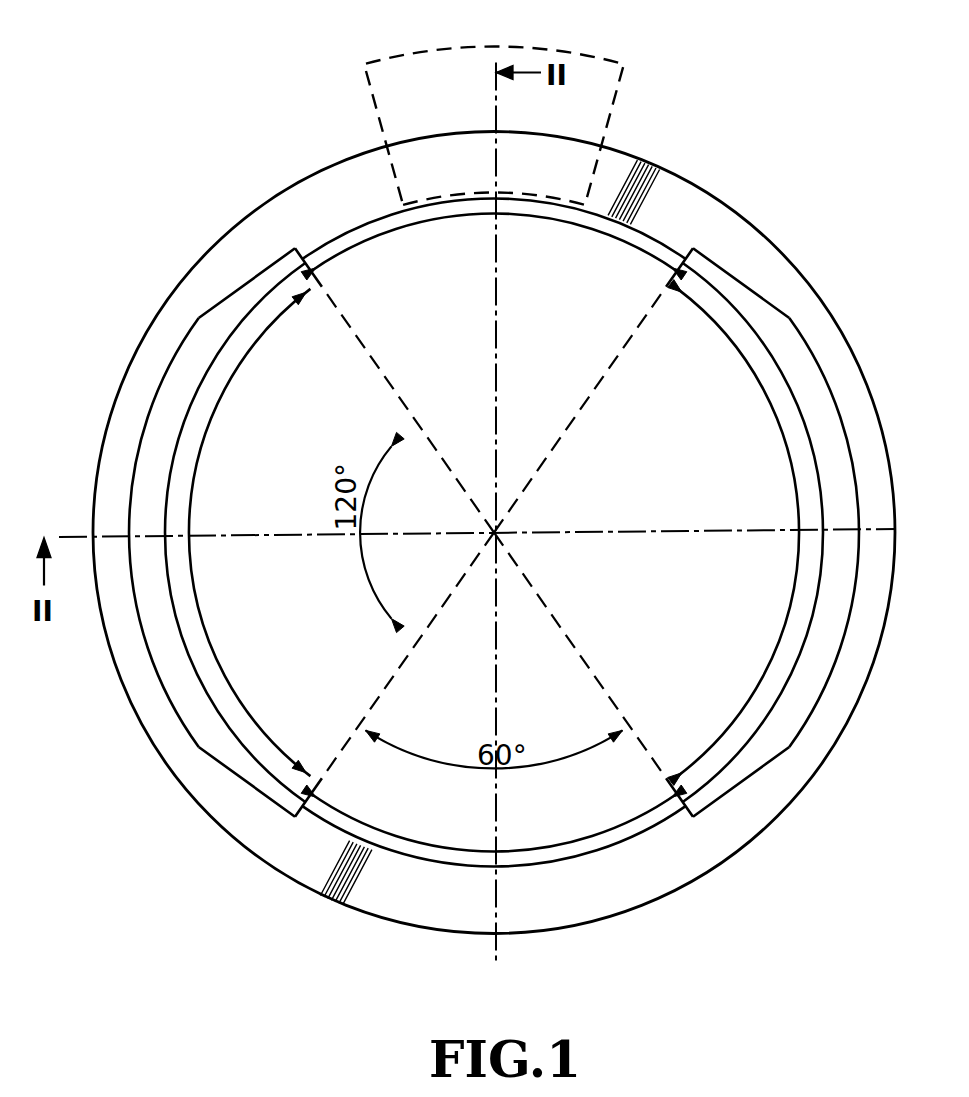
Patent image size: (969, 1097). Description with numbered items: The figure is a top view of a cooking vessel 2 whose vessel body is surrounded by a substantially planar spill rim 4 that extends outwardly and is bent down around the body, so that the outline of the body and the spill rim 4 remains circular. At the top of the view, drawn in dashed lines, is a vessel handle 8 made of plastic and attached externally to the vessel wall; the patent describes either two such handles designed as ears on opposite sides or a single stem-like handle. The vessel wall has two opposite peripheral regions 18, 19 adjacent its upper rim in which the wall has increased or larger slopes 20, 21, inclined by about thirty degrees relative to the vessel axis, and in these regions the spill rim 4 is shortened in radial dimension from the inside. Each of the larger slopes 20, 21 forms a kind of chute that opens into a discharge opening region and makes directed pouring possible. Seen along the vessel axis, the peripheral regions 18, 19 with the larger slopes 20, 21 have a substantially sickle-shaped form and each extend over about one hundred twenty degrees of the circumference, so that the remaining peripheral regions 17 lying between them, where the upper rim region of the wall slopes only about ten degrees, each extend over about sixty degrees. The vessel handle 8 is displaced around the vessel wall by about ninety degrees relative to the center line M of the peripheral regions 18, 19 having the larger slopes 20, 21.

The cooking vessel 2 is at (651, 127).
The spill rim 4 is at (388, 904).
The vessel handle 8 is at (583, 73).
The peripheral regions 17 is at (452, 218).
The peripheral region 18 is at (200, 447).
The peripheral region 19 is at (792, 624).
The increased slope 20 is at (157, 564).
The increased slope 21 is at (828, 556).
The center line M is at (641, 527).